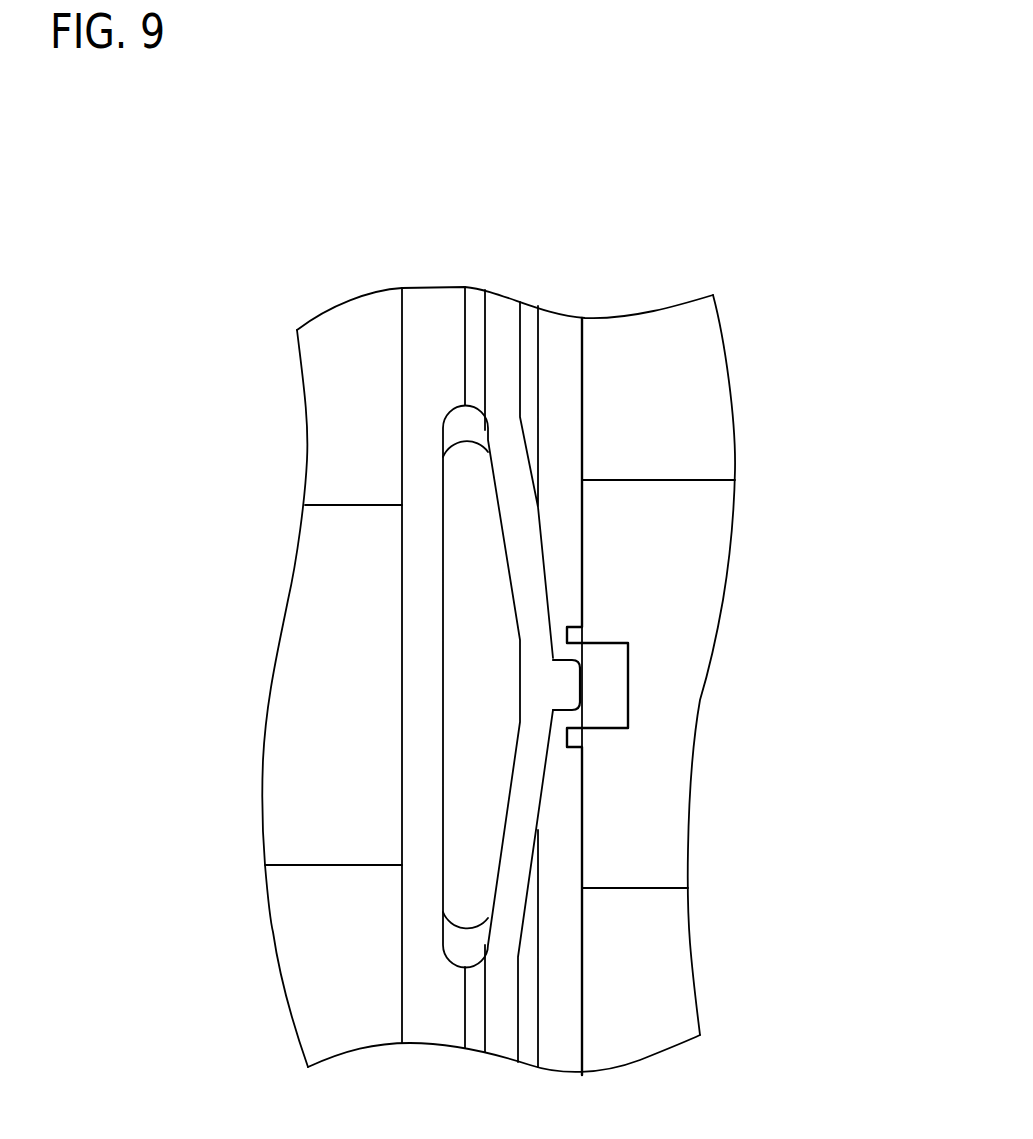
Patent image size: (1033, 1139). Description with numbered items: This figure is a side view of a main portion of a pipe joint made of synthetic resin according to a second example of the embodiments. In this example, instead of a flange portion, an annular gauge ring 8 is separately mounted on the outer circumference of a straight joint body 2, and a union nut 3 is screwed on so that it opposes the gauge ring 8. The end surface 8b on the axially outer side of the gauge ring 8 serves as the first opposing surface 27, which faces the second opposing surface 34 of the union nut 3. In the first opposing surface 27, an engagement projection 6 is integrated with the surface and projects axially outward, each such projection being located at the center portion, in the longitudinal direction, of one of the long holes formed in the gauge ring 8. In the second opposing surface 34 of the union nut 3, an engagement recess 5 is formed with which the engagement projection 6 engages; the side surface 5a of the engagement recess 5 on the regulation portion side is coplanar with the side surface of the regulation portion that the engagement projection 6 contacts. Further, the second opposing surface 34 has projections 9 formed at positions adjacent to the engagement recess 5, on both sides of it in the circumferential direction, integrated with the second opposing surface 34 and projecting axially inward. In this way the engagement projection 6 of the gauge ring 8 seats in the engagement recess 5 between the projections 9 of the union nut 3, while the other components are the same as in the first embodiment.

The joint body 2 is at (273, 932).
The union nut 3 is at (690, 943).
The gauge ring 8 is at (400, 978).
The end surface 8b is at (521, 340).
The first opposing surface 27 is at (595, 630).
The second opposing surface 34 is at (582, 421).
The side surface 5a is at (443, 672).
The engagement recess 5 is at (628, 690).
The engagement projection 6 is at (580, 683).
The projection 9 is at (575, 632).